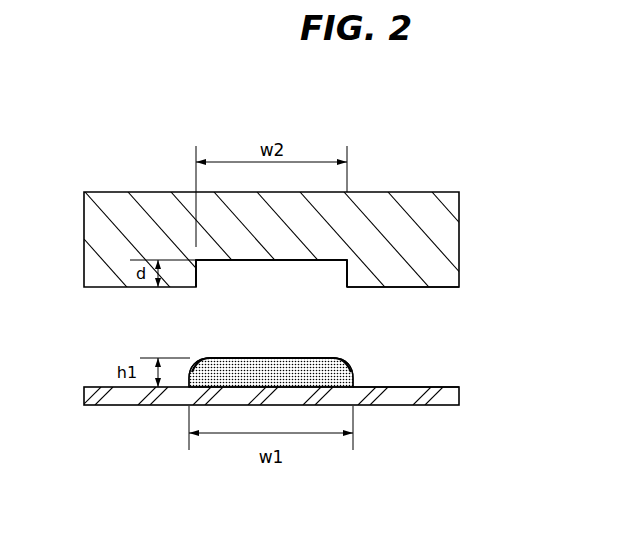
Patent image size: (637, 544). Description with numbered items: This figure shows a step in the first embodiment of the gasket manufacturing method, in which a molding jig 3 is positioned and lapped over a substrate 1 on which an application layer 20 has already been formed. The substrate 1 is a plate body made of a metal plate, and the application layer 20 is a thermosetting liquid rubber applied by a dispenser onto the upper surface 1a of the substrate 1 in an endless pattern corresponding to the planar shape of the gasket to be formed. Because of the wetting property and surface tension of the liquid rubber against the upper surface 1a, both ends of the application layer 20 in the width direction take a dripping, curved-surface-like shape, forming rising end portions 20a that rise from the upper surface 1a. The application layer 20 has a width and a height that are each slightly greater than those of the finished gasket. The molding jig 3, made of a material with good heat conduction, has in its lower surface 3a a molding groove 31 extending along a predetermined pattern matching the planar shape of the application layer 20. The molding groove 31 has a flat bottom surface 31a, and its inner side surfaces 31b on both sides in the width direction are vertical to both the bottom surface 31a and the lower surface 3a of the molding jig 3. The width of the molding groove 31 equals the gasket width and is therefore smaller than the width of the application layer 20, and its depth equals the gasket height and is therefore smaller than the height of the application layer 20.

The substrate 1 is at (369, 412).
The upper surface of the substrate 1a is at (425, 389).
The molding jig 3 is at (381, 210).
The lower surface of the molding jig 3a is at (418, 290).
The application layer 20 is at (277, 356).
The rising end portions 20a is at (190, 365).
The molding groove 31 is at (255, 272).
The bottom surface of the molding groove 31a is at (270, 264).
The inner side surfaces of the molding groove 31b is at (200, 289).